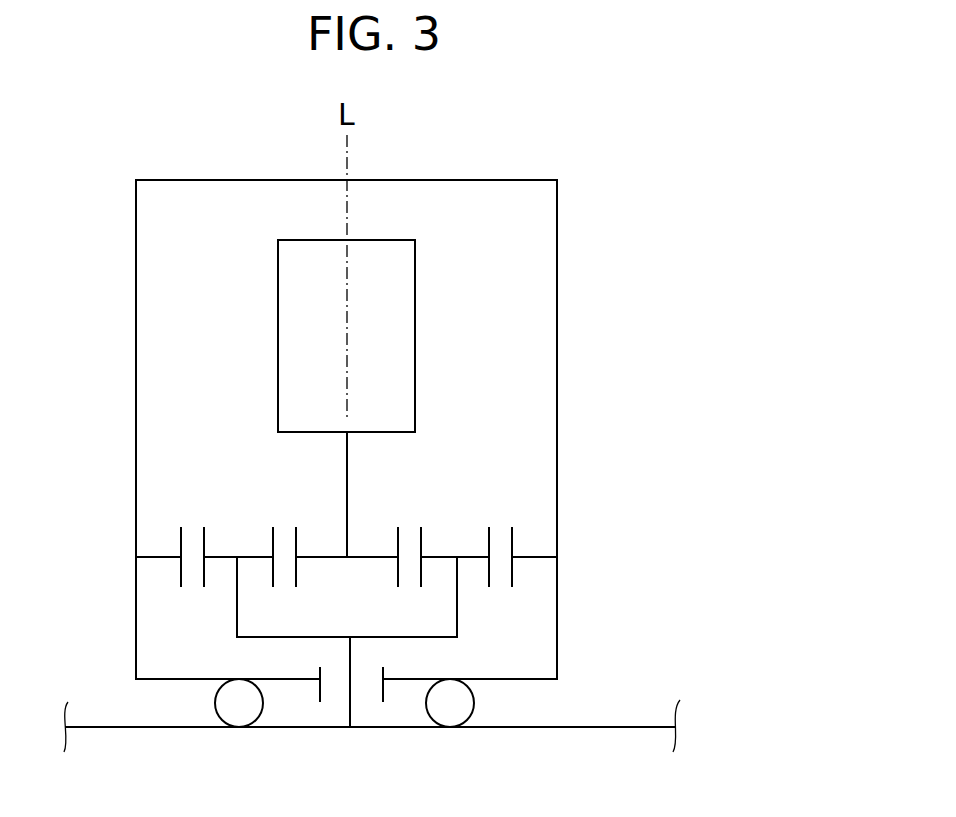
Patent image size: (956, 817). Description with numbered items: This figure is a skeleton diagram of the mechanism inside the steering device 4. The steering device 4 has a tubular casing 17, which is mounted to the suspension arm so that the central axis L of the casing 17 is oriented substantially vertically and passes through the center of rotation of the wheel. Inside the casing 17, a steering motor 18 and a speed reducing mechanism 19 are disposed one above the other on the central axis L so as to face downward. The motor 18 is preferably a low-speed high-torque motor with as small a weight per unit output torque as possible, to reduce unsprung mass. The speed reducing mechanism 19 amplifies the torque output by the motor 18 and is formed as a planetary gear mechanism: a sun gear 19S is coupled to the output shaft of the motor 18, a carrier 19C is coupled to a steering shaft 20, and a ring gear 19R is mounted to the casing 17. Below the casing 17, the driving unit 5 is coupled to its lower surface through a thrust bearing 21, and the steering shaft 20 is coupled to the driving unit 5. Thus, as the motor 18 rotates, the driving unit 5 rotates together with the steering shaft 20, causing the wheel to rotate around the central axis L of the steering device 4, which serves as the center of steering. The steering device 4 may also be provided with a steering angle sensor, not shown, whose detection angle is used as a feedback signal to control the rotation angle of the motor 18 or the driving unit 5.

The steering device 4 is at (563, 194).
The casing 17 is at (558, 255).
The steering motor 18 is at (277, 344).
The speed reducing mechanism 19 is at (495, 504).
The sun gear 19S is at (396, 538).
The ring gear 19R is at (515, 536).
The carrier 19C is at (460, 622).
The steering shaft 20 is at (352, 690).
The thrust bearing 21 is at (474, 705).
The driving unit 5 is at (607, 728).